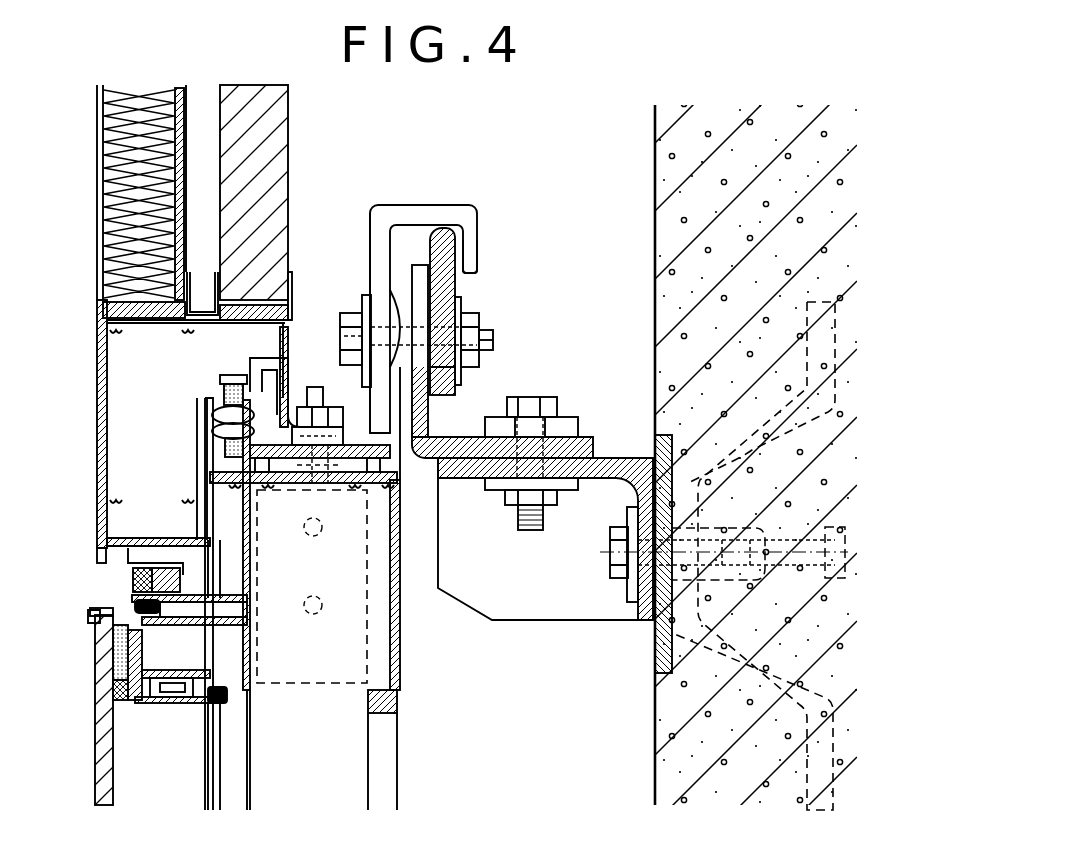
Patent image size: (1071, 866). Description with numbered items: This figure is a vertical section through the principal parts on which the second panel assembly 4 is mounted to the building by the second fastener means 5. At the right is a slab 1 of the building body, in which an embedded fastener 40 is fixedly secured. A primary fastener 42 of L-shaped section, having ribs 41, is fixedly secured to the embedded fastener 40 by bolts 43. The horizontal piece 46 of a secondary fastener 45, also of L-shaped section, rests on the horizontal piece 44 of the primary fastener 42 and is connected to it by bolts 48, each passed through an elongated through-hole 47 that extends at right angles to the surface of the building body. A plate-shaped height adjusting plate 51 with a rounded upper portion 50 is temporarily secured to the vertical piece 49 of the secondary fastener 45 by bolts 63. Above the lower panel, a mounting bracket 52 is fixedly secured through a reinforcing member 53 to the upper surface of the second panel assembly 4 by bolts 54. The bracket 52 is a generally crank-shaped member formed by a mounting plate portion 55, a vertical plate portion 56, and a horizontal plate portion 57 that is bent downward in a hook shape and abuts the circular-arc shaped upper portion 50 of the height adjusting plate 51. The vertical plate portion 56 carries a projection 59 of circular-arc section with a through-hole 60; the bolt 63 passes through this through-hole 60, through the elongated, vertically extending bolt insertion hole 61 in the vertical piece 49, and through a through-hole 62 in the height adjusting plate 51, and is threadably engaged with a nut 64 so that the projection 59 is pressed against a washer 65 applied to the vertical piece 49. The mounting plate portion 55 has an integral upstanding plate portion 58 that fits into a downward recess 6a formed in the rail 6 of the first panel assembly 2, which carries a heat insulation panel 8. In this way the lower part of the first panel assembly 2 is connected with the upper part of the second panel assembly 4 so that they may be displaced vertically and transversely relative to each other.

The slab 1 is at (655, 330).
The first panel assembly 2 is at (97, 172).
The second panel assembly 4 is at (97, 742).
The second fastener means 5 is at (540, 340).
The rail 6 is at (113, 377).
The downward recess 6a is at (250, 383).
The heat insulation panel 8 is at (110, 236).
The embedded fastener 40 is at (655, 670).
The rib 41 is at (497, 612).
The primary fastener 42 is at (620, 488).
The bolt 43 is at (605, 572).
The horizontal piece 44 is at (608, 462).
The secondary fastener 45 is at (432, 442).
The horizontal piece 46 is at (464, 460).
The elongated through-hole 47 is at (583, 430).
The bolt 48 is at (540, 400).
The vertical piece 49 is at (420, 268).
The rounded upper portion 50 is at (462, 228).
The height adjusting plate 51 is at (470, 262).
The mounting bracket 52 is at (383, 205).
The reinforcing member 53 is at (290, 488).
The bolt 54 is at (333, 488).
The mounting plate portion 55 is at (352, 432).
The vertical plate portion 56 is at (372, 232).
The horizontal plate portion 57 is at (441, 205).
The upstanding plate portion 58 is at (262, 367).
The projection 59 is at (395, 298).
The through-hole 60 is at (340, 337).
The bolt insertion hole 61 is at (455, 368).
The through-hole 62 is at (490, 341).
The bolt 63 is at (352, 310).
The nut 64 is at (480, 318).
The washer 65 is at (462, 295).